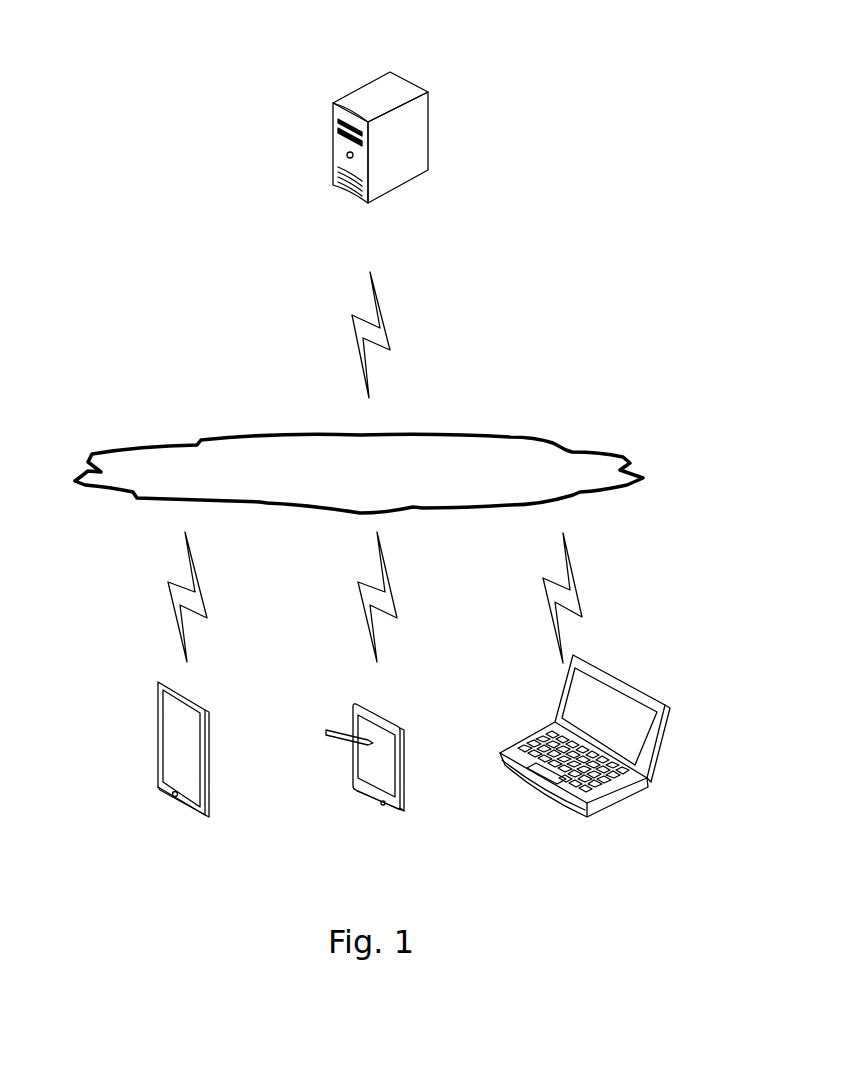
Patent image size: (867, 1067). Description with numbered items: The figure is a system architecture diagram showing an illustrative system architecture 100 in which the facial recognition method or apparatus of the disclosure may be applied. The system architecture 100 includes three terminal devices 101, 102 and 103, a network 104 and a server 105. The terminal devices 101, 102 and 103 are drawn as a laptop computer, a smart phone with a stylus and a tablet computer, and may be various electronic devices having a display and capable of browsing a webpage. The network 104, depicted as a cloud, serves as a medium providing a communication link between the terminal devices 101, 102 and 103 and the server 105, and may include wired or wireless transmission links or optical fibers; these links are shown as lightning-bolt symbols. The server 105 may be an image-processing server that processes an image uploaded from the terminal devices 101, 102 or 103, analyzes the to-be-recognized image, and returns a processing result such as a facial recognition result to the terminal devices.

The system architecture 100 is at (533, 43).
The terminal device 101 is at (585, 756).
The terminal device 102 is at (365, 780).
The terminal device 103 is at (183, 768).
The network 104 is at (359, 473).
The server 105 is at (380, 160).